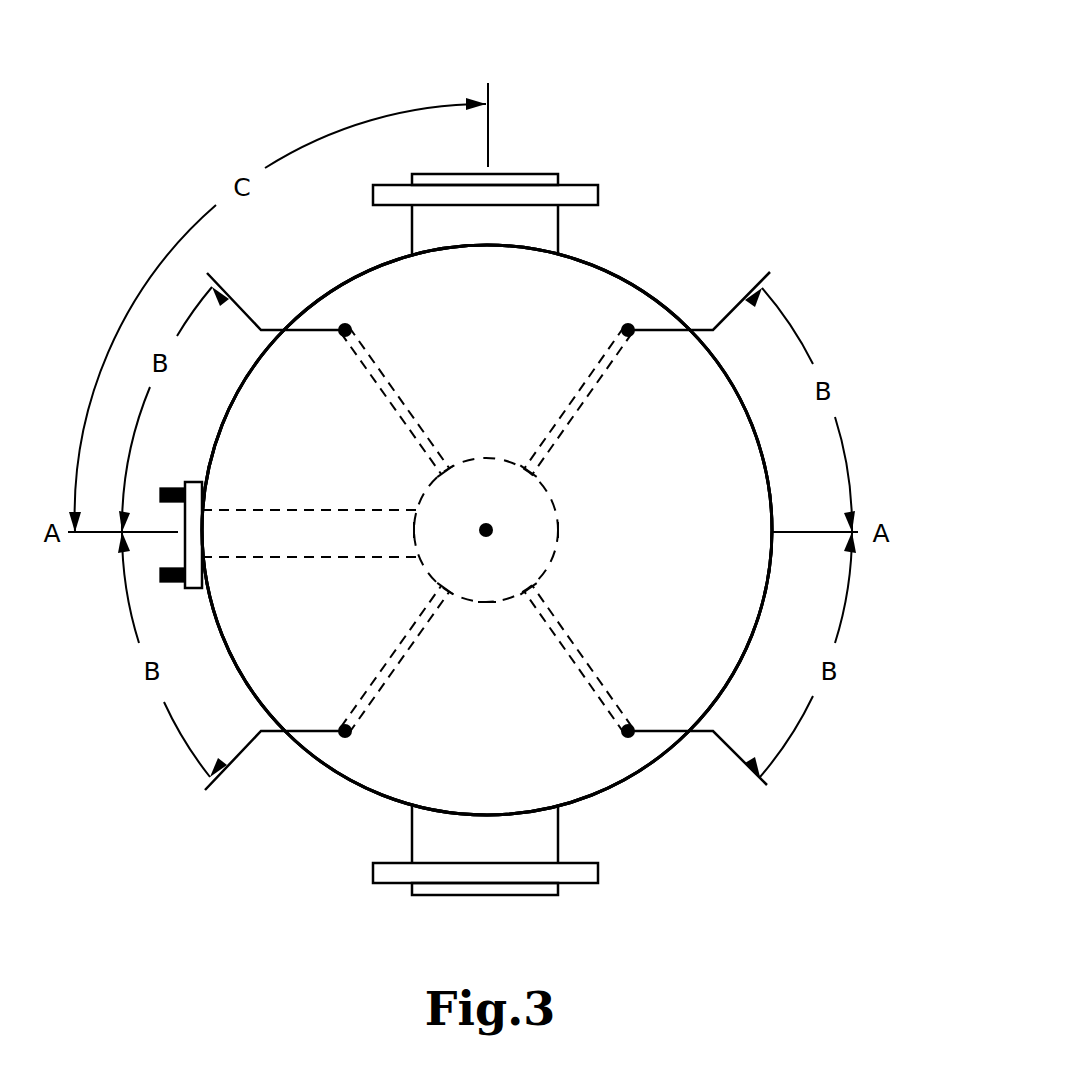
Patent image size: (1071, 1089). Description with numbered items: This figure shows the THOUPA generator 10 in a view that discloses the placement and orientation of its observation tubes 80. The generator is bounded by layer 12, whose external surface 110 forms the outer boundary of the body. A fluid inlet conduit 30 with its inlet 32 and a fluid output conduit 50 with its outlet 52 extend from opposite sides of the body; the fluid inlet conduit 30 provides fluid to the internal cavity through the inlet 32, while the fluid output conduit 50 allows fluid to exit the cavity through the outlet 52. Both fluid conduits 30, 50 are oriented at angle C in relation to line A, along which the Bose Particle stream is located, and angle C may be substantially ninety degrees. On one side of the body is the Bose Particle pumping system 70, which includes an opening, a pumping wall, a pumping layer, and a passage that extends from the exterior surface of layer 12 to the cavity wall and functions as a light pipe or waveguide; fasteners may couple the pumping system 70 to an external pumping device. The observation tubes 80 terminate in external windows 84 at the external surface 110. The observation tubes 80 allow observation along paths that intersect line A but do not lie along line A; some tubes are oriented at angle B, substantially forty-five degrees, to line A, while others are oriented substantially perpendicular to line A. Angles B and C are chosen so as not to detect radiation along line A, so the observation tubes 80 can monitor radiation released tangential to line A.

The THOUPA generator 10 is at (718, 130).
The external surface 110 is at (335, 780).
The layer 12 is at (487, 530).
The fluid inlet conduit 30 is at (598, 835).
The inlet 32 is at (512, 902).
The fluid output conduit 50 is at (565, 230).
The outlet 52 is at (512, 162).
The Bose Particle pumping system 70 is at (190, 478).
The observation tubes 80 is at (395, 380).
The external windows 84 is at (340, 340).